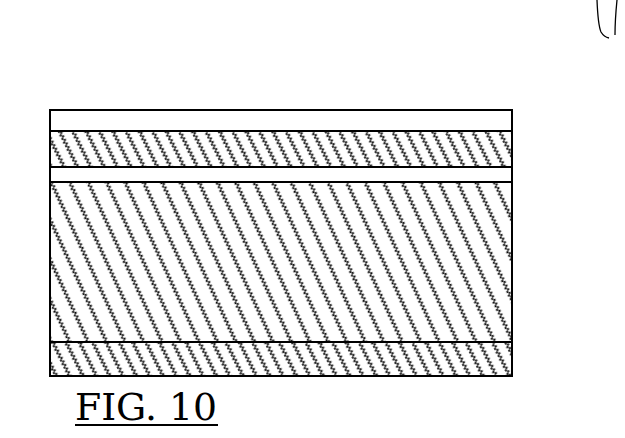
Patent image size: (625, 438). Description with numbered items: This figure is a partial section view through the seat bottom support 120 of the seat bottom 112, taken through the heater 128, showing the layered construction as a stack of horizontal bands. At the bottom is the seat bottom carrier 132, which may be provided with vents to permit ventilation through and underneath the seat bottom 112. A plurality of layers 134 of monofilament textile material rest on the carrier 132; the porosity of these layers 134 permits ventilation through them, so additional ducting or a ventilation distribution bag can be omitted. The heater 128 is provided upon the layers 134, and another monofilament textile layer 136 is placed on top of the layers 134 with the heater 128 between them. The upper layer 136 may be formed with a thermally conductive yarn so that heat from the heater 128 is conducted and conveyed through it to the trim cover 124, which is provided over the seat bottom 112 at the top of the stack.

The seat bottom 112 is at (162, 84).
The seat bottom support 120 is at (86, 102).
The trim cover 124 is at (495, 123).
The monofilament textile layer 136 is at (480, 147).
The heater 128 is at (480, 172).
The layers 134 is at (475, 298).
The seat bottom carrier 132 is at (475, 357).